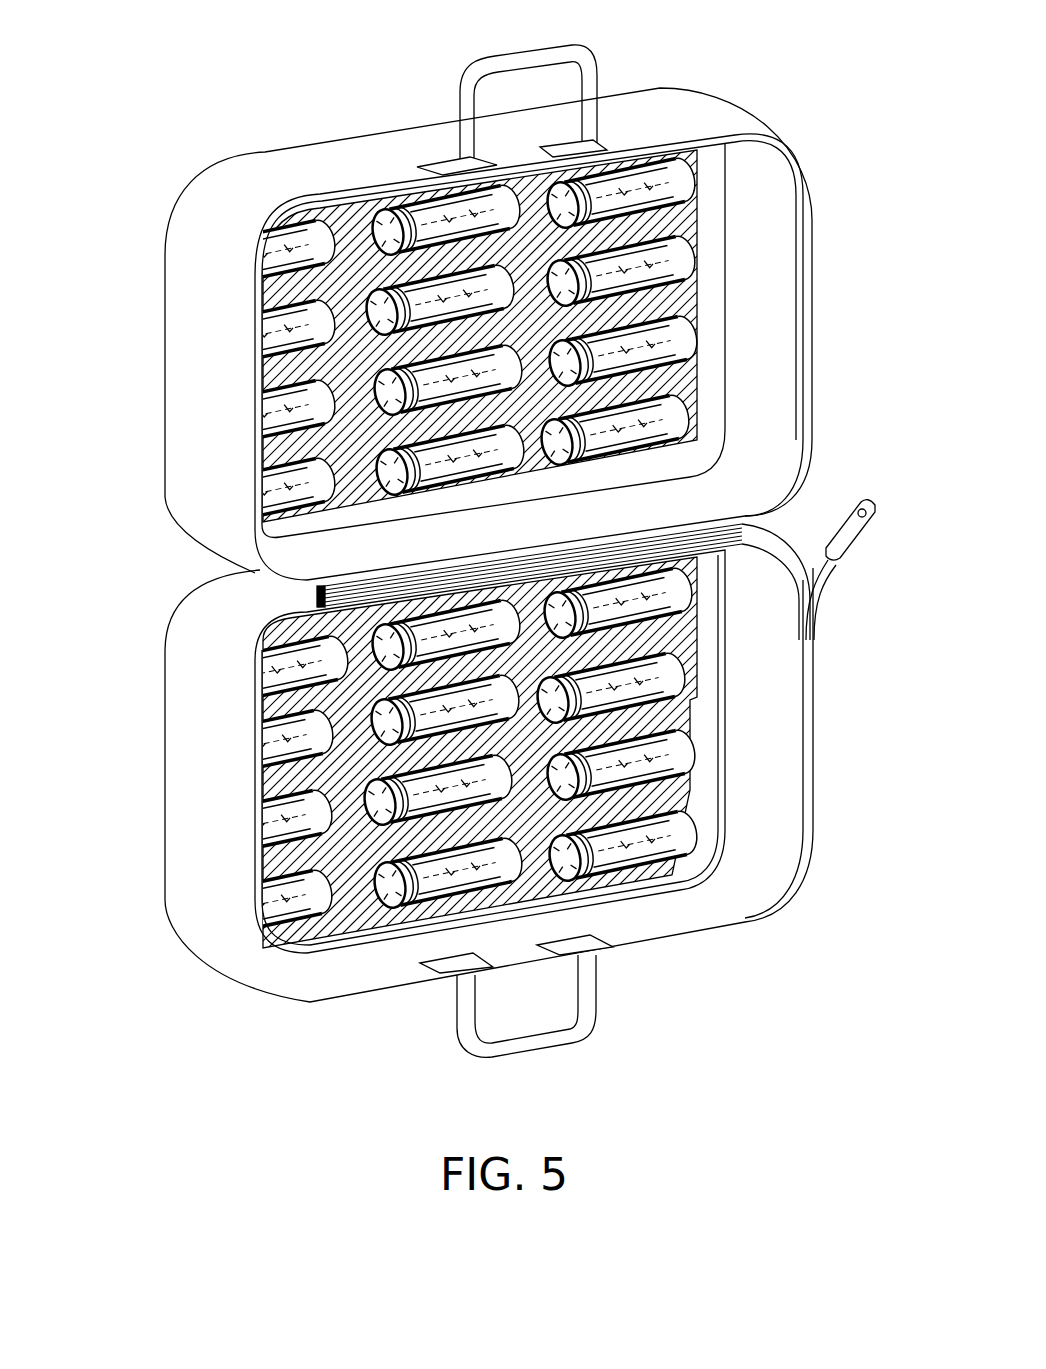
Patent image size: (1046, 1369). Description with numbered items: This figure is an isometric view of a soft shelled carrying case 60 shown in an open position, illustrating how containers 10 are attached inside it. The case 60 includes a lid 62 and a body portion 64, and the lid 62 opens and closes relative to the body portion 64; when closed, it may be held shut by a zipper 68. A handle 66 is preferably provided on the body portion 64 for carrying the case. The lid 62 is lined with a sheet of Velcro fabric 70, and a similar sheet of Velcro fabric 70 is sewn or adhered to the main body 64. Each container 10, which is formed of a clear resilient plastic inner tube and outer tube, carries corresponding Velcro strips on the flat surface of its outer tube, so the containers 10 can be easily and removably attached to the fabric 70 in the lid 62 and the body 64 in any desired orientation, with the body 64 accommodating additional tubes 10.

The container 10 is at (680, 417).
The soft shelled carrying case 60 is at (175, 748).
The lid 62 is at (200, 348).
The body portion 64 is at (690, 947).
The handle 66 is at (477, 1048).
The zipper 68 is at (888, 512).
The sheet of Velcro fabric 70 is at (352, 220).